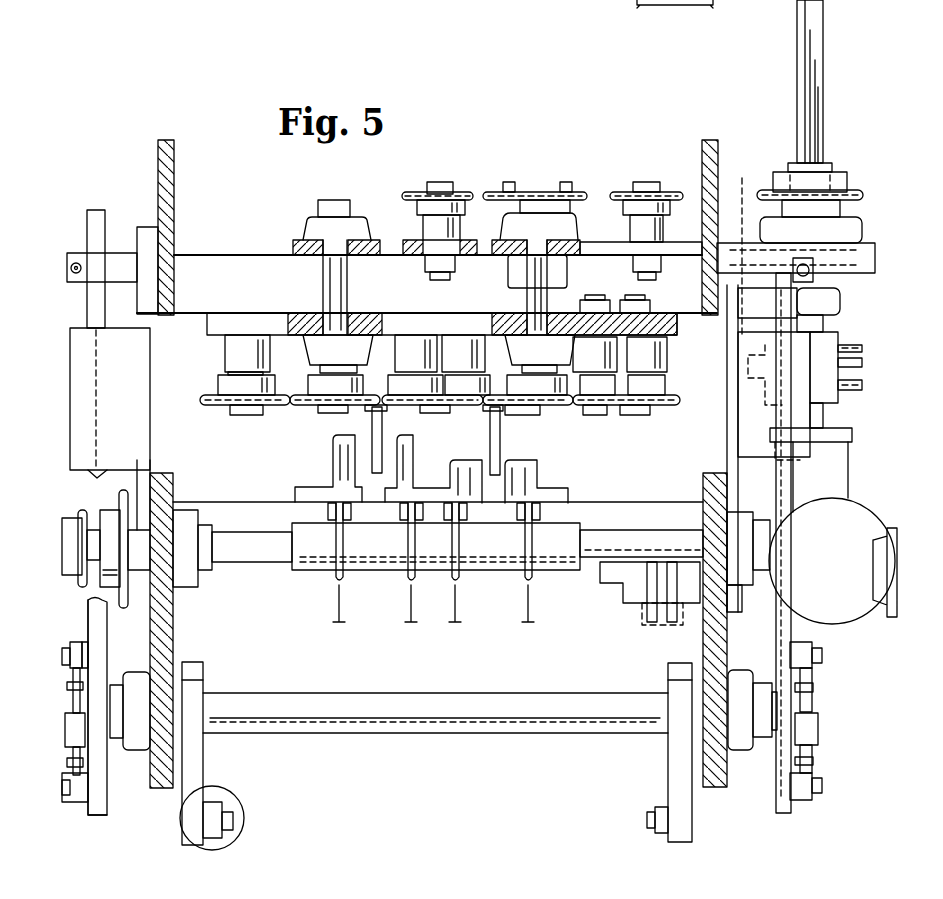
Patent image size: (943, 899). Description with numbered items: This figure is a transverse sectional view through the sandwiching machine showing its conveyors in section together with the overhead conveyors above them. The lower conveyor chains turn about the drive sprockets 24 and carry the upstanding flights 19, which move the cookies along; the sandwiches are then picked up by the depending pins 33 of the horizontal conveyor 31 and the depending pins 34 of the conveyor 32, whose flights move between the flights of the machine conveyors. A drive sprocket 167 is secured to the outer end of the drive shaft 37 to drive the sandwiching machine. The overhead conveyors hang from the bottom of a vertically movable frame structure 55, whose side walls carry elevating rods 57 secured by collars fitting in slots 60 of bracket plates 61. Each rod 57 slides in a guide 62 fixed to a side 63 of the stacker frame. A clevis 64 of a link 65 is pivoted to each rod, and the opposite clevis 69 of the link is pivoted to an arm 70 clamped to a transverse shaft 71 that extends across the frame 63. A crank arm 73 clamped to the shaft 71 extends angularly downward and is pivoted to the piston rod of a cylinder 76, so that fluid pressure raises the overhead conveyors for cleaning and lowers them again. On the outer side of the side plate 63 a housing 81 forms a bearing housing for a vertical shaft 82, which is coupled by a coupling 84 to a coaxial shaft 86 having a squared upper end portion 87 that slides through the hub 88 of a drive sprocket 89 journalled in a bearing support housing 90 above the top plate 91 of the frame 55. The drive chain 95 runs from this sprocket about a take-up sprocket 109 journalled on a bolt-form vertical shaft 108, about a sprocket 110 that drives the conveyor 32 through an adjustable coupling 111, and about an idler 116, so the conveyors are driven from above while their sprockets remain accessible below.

The flights 19 is at (340, 456).
The drive sprockets 24 is at (343, 585).
The horizontal conveyor 31 is at (215, 405).
The conveyor 32 is at (660, 408).
The depending pins 33 is at (372, 424).
The depending pins 34 is at (500, 427).
The drive shaft 37 is at (300, 572).
The frame structure 55 is at (158, 152).
The elevating rods 57 is at (96, 210).
The slots 60 is at (67, 262).
The bracket plates 61 is at (150, 227).
The guides 62 is at (70, 348).
The sides of the frame structure for the stacker 63 is at (173, 622).
The clevis 64 is at (812, 672).
The link 65 is at (818, 728).
The clevis 69 is at (812, 800).
The arm 70 is at (100, 815).
The transverse shaft 71 is at (435, 733).
The crank arm 73 is at (203, 758).
The cylinder 76 is at (235, 795).
The housing 81 is at (848, 472).
The vertical shaft 82 is at (823, 412).
The coupling 84 is at (862, 368).
The coaxial shaft 86 is at (840, 318).
The squared upper end portion 87 is at (823, 100).
The hub 88 is at (863, 195).
The drive sprocket 89 is at (847, 180).
The bearing support housing 90 is at (862, 228).
The top plate 91 is at (875, 262).
The drive chain 95 is at (739, 245).
The vertical shaft 108 is at (441, 182).
The take-up sprocket 109 is at (415, 192).
The sprocket 110 is at (560, 192).
The adjustable coupling 111 is at (515, 190).
The idler 116 is at (668, 192).
The drive sprocket 167 is at (80, 512).